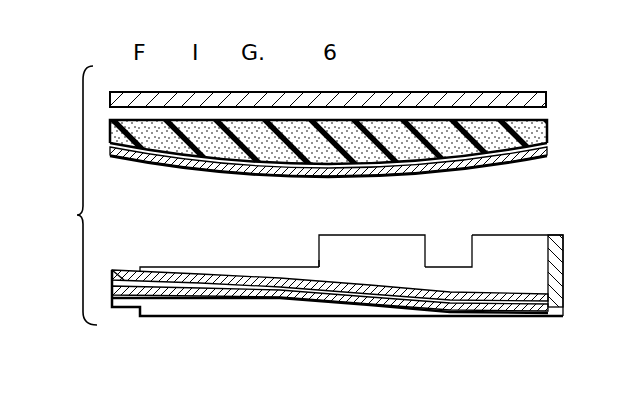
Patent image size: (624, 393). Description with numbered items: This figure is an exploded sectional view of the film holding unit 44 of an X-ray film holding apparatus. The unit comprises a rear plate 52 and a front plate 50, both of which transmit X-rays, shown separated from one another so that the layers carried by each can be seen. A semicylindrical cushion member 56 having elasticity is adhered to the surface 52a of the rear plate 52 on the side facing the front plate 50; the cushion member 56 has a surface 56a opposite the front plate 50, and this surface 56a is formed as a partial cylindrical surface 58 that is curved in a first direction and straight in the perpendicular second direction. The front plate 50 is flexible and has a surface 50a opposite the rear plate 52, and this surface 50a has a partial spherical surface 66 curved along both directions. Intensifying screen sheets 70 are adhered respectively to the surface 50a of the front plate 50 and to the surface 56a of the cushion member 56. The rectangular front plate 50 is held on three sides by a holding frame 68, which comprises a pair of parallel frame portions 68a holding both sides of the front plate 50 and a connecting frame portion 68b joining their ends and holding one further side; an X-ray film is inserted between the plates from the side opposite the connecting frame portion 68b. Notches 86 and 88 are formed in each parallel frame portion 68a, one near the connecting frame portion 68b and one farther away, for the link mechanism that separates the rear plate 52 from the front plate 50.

The film holding unit 44 is at (66, 195).
The rear plate 52 is at (493, 90).
The surface of rear plate 52a is at (400, 107).
The semicylindrical cushion member 56 is at (549, 124).
The surface of semicylindrical cushion member 56a is at (490, 166).
The partial cylindrical surface 58 is at (436, 172).
The intensifying screen sheets 70 is at (331, 178).
The front plate 50 is at (353, 306).
The surface of front plate 50a is at (128, 259).
The partial spherical surface 66 is at (188, 287).
The notch 88 is at (318, 260).
The holding frame 68 is at (607, 255).
The parallel frame portions 68a is at (370, 246).
The notch 86 is at (452, 263).
The connecting frame portion 68b is at (565, 283).